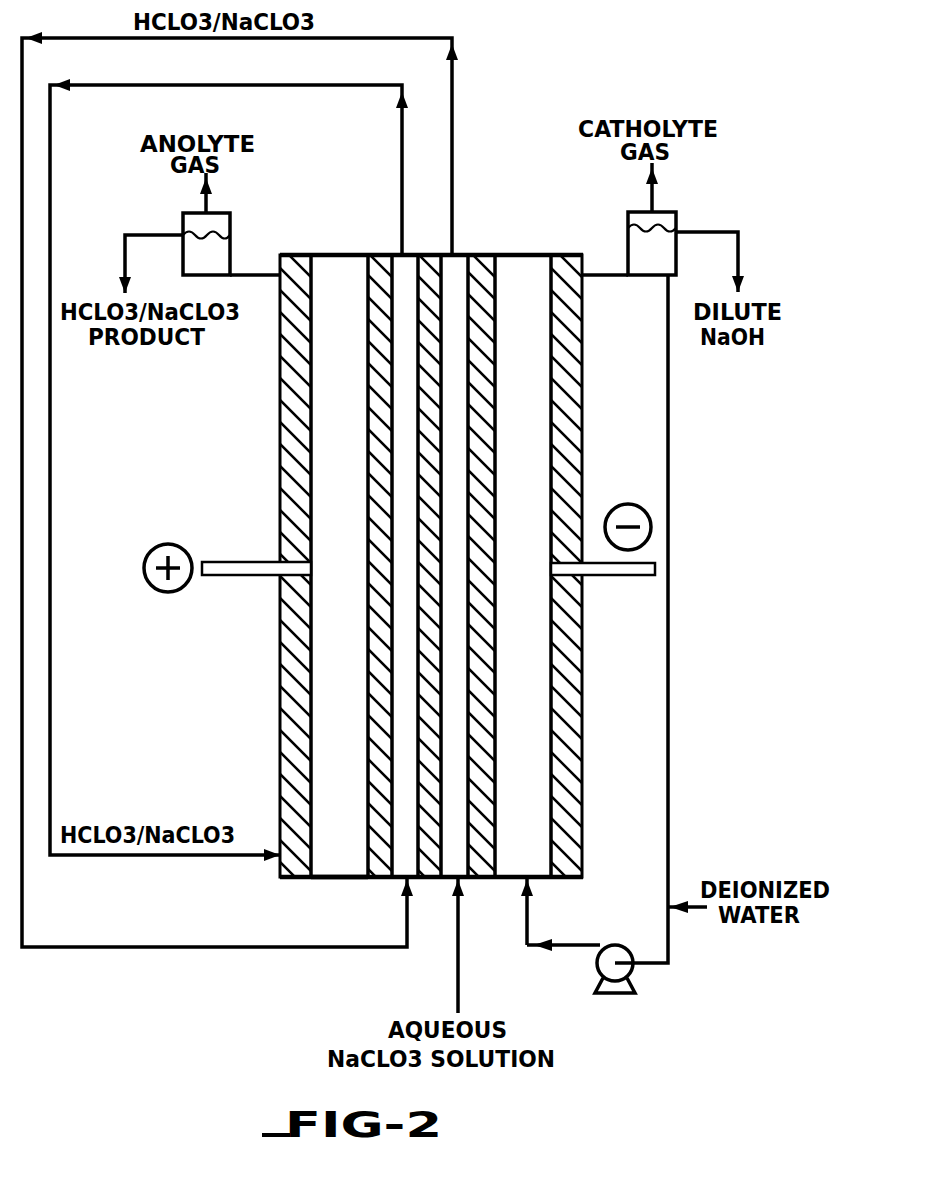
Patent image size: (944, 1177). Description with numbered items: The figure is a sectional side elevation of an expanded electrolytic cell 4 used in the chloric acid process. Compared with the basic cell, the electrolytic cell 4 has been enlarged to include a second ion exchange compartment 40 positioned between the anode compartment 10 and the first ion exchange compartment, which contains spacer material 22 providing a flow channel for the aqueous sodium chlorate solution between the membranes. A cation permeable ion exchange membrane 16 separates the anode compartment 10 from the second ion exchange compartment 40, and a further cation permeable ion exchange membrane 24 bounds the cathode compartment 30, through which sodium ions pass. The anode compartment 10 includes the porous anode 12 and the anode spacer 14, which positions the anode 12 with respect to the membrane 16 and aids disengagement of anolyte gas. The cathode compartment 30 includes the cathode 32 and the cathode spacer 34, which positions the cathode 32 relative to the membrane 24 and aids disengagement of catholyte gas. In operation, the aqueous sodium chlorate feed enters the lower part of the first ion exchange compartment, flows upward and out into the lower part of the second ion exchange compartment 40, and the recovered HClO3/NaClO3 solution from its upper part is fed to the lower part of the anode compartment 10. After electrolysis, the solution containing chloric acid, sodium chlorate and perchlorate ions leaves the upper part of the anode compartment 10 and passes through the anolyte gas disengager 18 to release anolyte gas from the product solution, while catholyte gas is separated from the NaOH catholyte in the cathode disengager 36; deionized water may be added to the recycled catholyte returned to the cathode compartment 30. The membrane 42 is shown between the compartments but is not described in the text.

The electrolytic cell 4 is at (428, 573).
The anode compartment 10 is at (328, 255).
The anode 12 is at (347, 866).
The anode spacer 14 is at (280, 405).
The cation permeable ion exchange membrane 16 is at (377, 255).
The anolyte gas disengager 18 is at (222, 265).
The spacer material 22 is at (458, 268).
The cation permeable ion exchange membrane 24 is at (488, 878).
The cathode compartment 30 is at (545, 880).
The cathode 32 is at (525, 268).
The cathode spacer 34 is at (582, 675).
The cathode disengager 36 is at (642, 262).
The second ion exchange compartment 40 is at (400, 465).
The anion exchange membrane 42 is at (433, 880).